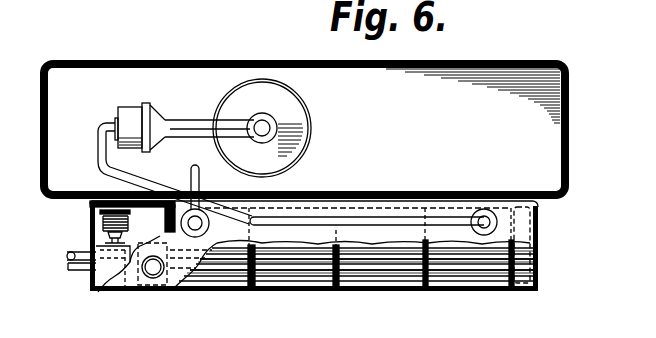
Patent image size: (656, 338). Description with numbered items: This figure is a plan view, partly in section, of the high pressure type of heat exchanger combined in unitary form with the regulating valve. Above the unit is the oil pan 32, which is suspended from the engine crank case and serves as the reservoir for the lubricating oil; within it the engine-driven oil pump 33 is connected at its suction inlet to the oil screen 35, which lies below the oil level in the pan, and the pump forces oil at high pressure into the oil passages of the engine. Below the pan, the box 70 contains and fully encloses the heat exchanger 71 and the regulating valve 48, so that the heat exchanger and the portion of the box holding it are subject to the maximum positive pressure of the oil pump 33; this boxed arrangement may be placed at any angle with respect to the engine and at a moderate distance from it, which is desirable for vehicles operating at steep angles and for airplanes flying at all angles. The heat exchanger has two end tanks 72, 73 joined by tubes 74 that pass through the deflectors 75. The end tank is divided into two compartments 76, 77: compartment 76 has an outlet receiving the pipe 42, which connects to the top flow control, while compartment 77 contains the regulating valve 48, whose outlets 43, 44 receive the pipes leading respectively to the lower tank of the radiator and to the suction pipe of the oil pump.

The oil pan 32 is at (543, 133).
The oil pump 33 is at (130, 109).
The oil screen 35 is at (292, 116).
The pipe 42 is at (168, 274).
The outlet 43 is at (68, 270).
The outlet 44 is at (66, 254).
The regulating valve 48 is at (106, 264).
The box 70 is at (538, 270).
The heat exchanger 71 is at (312, 277).
The end tank 72 is at (526, 244).
The end tank 73 is at (125, 284).
The tubes 74 is at (389, 264).
The deflectors 75 is at (428, 287).
The compartment 76 is at (148, 285).
The compartment 77 is at (98, 233).